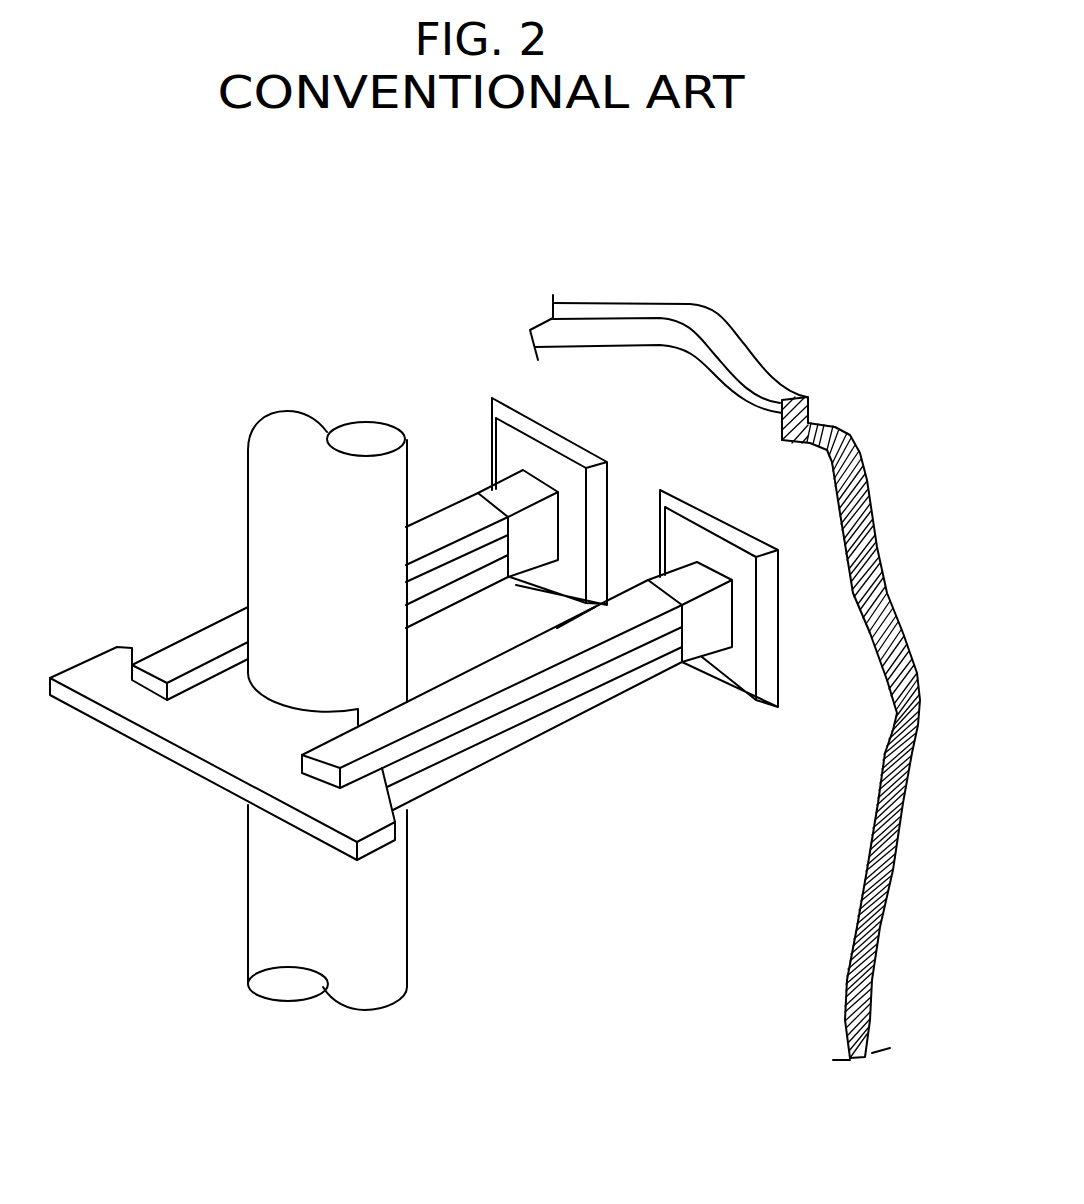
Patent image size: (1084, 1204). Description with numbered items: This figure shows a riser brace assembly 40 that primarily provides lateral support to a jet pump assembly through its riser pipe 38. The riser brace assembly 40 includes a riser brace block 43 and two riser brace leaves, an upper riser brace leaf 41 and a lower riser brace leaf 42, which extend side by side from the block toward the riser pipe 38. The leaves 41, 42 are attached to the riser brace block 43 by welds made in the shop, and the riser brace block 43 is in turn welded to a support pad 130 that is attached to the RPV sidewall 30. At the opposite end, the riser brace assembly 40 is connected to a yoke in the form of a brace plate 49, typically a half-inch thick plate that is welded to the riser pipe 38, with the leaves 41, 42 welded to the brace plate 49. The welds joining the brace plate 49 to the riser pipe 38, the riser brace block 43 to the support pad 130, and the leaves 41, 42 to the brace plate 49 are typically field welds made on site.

The RPV sidewall 30 is at (716, 445).
The riser pipe 38 is at (248, 953).
The riser brace assembly 40 is at (405, 656).
The upper riser brace leaf 41 is at (455, 503).
The lower riser brace leaf 42 is at (550, 736).
The riser brace block 43 is at (653, 570).
The brace plate 49 is at (143, 755).
The support pad 130 is at (783, 693).